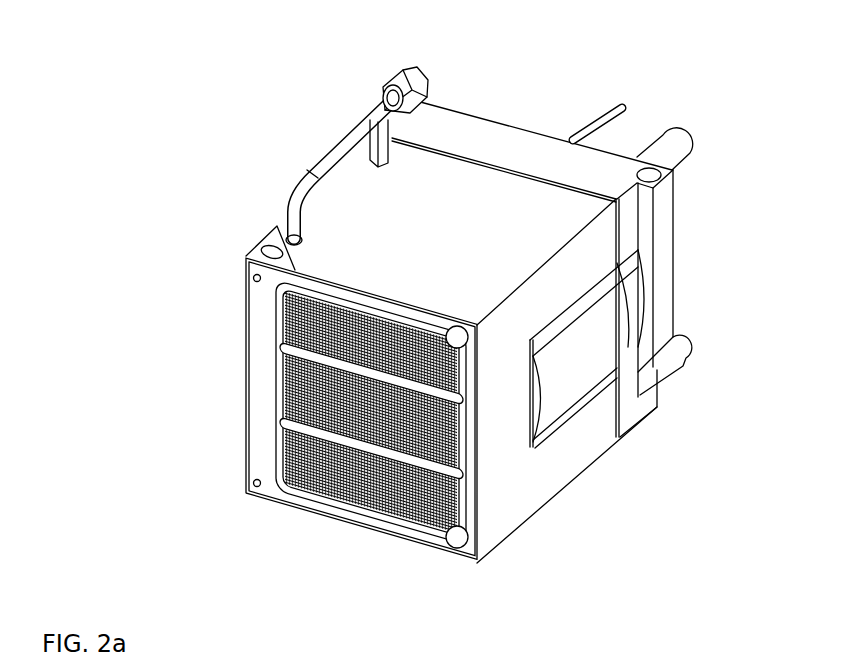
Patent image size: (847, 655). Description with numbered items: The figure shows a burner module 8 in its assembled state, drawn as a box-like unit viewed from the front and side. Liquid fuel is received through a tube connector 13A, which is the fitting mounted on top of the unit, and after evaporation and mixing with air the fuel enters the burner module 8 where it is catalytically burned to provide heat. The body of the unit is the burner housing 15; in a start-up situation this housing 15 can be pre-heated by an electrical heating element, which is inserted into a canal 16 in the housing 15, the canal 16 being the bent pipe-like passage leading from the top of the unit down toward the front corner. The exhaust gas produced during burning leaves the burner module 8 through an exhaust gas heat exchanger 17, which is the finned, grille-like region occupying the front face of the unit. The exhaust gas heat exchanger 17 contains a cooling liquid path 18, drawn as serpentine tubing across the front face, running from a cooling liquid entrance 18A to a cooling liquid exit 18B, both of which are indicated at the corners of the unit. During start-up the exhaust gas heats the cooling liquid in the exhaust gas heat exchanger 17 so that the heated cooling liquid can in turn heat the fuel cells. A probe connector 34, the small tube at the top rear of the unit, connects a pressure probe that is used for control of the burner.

The burner module 8 is at (161, 385).
The tube connector 13A is at (343, 133).
The burner housing 15 is at (402, 221).
The canal 16 is at (285, 235).
The exhaust gas heat exchanger 17 is at (275, 402).
The cooling liquid path 18 is at (412, 528).
The cooling liquid entrance 18A is at (452, 340).
The cooling liquid exit 18B is at (480, 557).
The probe connector 34 is at (622, 105).